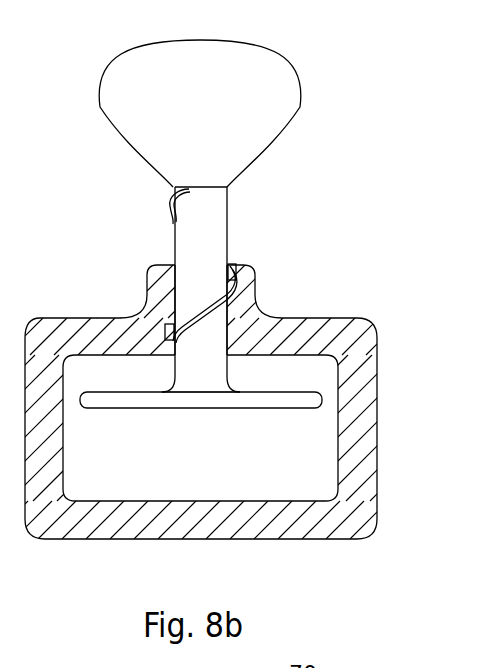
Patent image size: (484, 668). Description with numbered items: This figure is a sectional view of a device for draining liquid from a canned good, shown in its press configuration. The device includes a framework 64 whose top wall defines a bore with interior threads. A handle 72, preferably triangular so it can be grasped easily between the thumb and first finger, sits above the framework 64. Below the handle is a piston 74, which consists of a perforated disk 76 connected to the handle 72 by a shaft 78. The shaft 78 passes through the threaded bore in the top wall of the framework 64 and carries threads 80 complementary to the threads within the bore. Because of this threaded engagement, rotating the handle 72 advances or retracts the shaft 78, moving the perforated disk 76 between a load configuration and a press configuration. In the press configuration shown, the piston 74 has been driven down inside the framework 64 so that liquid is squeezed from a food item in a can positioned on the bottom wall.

The framework 64 is at (88, 275).
The handle 72 is at (282, 59).
The piston 74 is at (128, 415).
The perforated disk 76 is at (257, 408).
The shaft 78 is at (229, 208).
The threads 80 is at (229, 262).